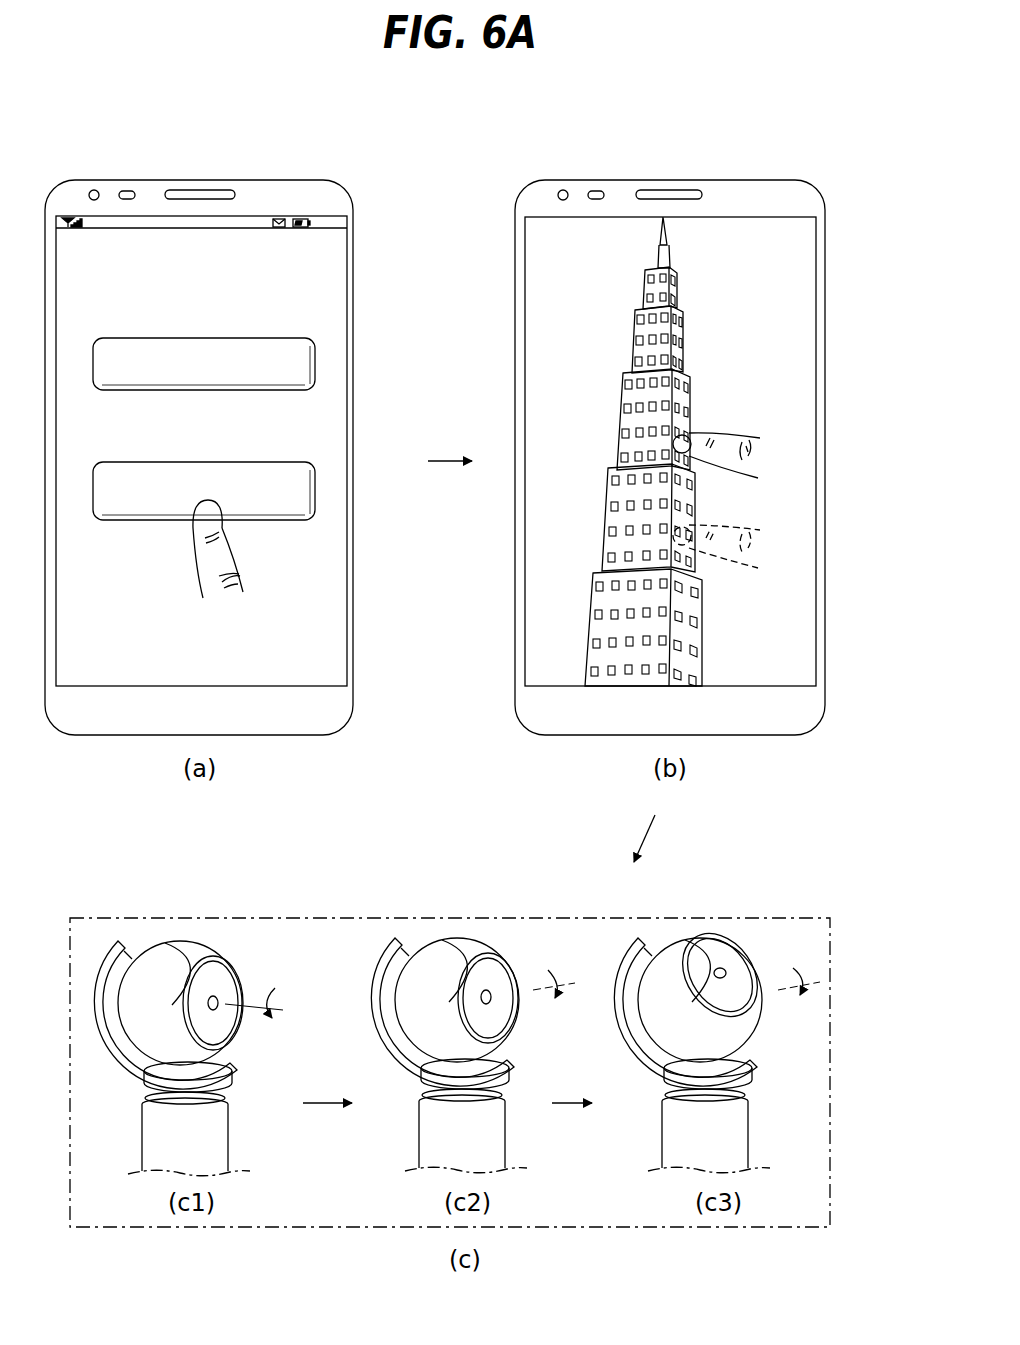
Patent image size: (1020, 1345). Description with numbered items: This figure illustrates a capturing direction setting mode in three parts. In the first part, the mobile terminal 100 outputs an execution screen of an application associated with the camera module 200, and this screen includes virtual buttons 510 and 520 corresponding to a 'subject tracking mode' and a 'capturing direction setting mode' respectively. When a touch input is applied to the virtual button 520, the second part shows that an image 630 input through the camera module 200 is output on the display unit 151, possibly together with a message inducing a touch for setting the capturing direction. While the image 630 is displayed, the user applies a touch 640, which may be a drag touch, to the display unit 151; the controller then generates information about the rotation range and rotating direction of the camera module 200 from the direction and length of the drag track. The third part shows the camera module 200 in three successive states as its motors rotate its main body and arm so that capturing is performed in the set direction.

The mobile terminal 100 is at (262, 176).
The display unit 151 is at (320, 215).
The virtual button 510 is at (315, 362).
The virtual button 520 is at (315, 494).
The image 630 is at (787, 347).
The touch 640 is at (680, 372).
The camera module 200 is at (118, 936).